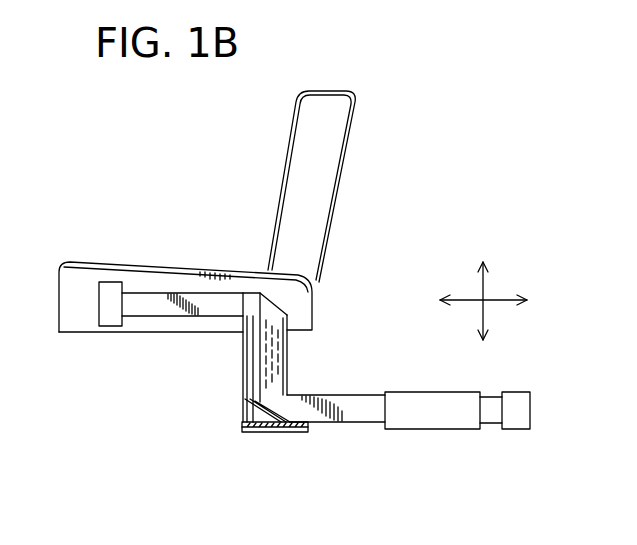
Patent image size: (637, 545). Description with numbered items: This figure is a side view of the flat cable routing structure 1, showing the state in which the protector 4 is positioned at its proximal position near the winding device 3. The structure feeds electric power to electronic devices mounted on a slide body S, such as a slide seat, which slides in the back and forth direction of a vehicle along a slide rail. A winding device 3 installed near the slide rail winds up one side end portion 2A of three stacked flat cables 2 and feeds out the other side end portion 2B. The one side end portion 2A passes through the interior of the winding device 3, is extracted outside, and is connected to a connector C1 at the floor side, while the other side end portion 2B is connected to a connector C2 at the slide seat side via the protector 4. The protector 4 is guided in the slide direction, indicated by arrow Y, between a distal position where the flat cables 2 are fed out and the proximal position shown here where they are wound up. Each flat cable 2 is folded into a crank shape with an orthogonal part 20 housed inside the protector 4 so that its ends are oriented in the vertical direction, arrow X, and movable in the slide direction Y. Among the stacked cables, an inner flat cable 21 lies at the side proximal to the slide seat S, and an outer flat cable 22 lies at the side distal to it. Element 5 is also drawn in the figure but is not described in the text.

The flat cable routing structure 1 is at (497, 104).
The slide body S is at (350, 138).
The vertical direction X is at (486, 281).
The slide direction Y is at (499, 303).
The connector C2 is at (99, 303).
The other side end portion 2B is at (150, 317).
The orthogonal part 20 is at (263, 380).
The inner flat cable 21 is at (245, 393).
The outer flat cable 22 is at (265, 397).
The protector 4 is at (288, 350).
The inner member 5 is at (278, 365).
The flat cable 2 is at (343, 423).
The winding device 3 is at (435, 430).
The one side end portion 2A is at (488, 430).
The connector C1 is at (522, 430).